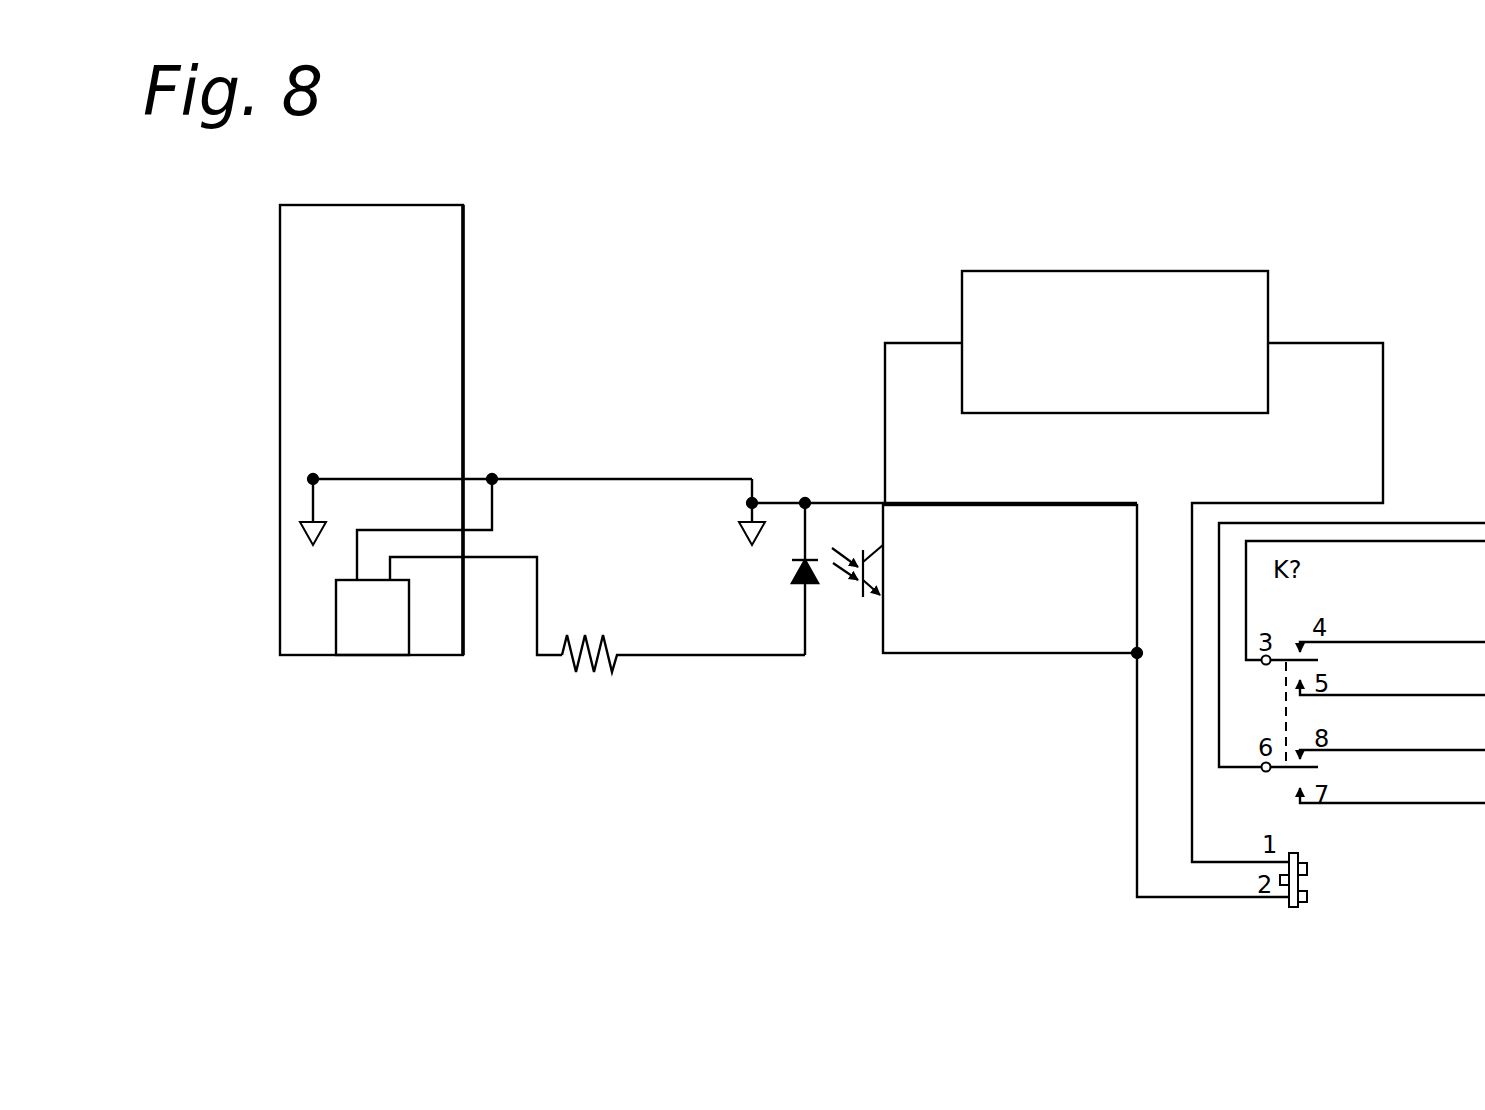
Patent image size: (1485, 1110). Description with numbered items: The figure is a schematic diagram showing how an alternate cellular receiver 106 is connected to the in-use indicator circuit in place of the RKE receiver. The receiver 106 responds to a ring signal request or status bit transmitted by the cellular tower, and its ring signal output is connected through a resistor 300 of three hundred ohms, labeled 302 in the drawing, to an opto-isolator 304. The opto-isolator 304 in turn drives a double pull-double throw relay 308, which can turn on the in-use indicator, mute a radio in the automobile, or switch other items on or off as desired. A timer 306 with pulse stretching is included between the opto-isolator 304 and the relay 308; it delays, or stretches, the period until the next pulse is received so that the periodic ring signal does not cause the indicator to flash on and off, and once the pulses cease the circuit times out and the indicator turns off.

The in-use receiver 106 is at (463, 255).
The resistor 300 is at (375, 657).
The 300 ohm resistor 302 is at (607, 645).
The opto-isolator 304 is at (860, 602).
The timer 306 is at (1003, 270).
The double pull-double throw (DPDT) relay 308 is at (1300, 880).